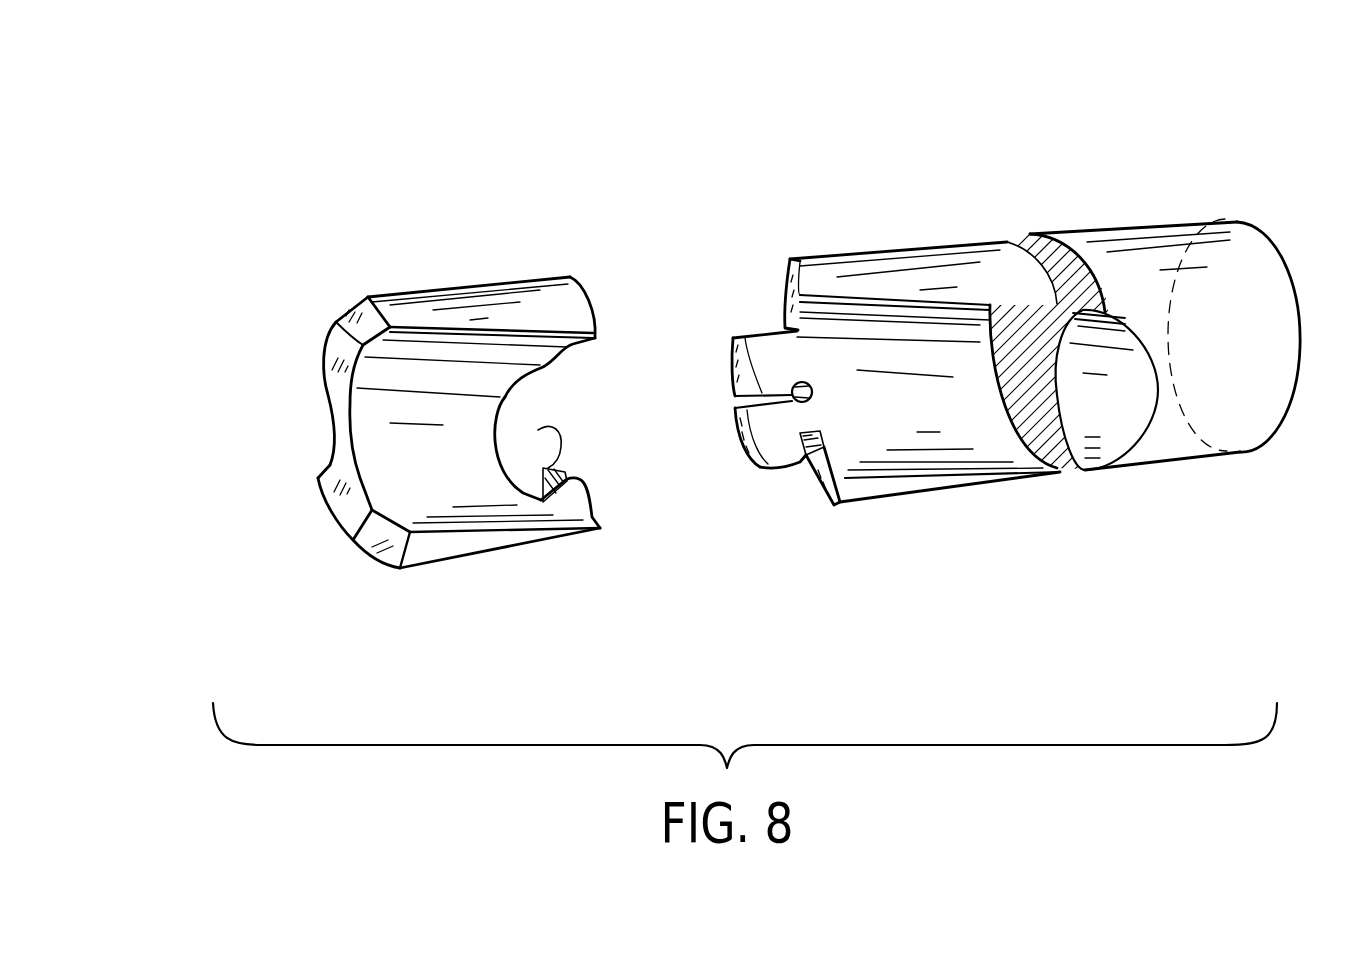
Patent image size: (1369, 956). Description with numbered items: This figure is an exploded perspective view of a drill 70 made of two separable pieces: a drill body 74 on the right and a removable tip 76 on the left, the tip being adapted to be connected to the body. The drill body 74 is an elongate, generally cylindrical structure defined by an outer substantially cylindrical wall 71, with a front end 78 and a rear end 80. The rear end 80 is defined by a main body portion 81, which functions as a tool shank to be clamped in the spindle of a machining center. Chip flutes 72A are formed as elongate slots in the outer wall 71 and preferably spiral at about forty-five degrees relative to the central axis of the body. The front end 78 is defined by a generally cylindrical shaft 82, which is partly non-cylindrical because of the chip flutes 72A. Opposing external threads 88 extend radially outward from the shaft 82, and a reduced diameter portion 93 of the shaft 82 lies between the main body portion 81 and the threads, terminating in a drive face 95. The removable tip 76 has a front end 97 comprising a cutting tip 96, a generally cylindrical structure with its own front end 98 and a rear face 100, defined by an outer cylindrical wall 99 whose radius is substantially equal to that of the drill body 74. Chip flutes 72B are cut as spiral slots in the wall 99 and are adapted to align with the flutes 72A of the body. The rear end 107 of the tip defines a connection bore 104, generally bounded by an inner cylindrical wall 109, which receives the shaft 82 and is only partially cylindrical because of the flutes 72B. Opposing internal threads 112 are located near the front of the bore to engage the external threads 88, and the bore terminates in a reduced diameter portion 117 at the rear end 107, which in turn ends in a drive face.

The drill 70 is at (352, 135).
The outer substantially cylindrical wall 71 is at (1199, 450).
The chip flutes 72A is at (953, 367).
The chip flutes 72B is at (312, 378).
The drill body 74 is at (1173, 93).
The removable tip 76 is at (372, 250).
The front end 78 is at (723, 457).
The rear end 80 is at (1277, 230).
The main body portion 81 is at (763, 394).
The shaft 82 is at (727, 398).
The external thread 88 is at (777, 462).
The reduced diameter portion 93 is at (820, 447).
The drive face 95 is at (803, 463).
The cutting tip 96 is at (343, 430).
The front end 97 is at (255, 400).
The front end 98 is at (318, 470).
The outer cylindrical wall 99 is at (470, 290).
The rear face 100 is at (583, 287).
The connection bore 104 is at (547, 410).
The rear end 107 is at (577, 407).
The inner cylindrical wall 109 is at (567, 471).
The internal thread 112 is at (540, 492).
The reduced diameter portion 117 is at (525, 441).